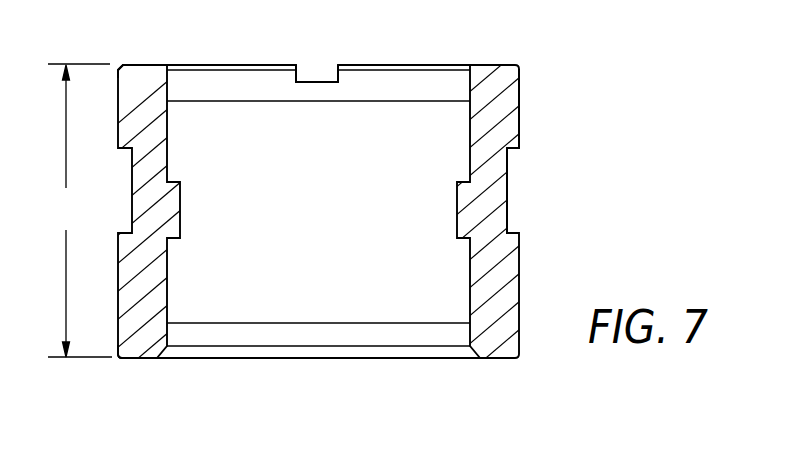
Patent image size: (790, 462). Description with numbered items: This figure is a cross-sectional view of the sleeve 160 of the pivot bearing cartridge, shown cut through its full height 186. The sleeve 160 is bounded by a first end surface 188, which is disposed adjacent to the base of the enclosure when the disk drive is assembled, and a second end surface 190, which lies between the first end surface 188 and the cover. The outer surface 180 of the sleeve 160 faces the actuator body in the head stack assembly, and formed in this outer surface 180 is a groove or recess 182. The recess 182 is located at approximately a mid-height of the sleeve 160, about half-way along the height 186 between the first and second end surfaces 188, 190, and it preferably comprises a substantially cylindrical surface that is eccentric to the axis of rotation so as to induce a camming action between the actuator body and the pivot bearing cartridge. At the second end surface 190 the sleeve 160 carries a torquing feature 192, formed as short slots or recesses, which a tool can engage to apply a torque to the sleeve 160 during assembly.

The sleeve 160 is at (520, 72).
The outer surface 180 is at (520, 120).
The recess 182 is at (508, 195).
The height 186 is at (79, 210).
The first end surface 188 is at (140, 358).
The second end surface 190 is at (143, 63).
The torquing feature 192 is at (313, 82).